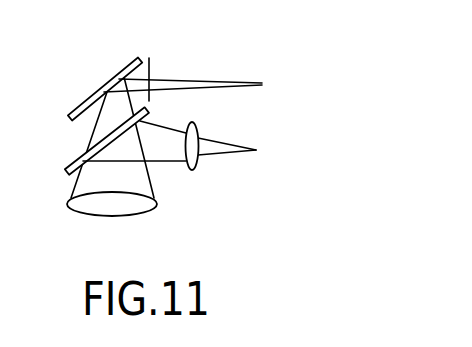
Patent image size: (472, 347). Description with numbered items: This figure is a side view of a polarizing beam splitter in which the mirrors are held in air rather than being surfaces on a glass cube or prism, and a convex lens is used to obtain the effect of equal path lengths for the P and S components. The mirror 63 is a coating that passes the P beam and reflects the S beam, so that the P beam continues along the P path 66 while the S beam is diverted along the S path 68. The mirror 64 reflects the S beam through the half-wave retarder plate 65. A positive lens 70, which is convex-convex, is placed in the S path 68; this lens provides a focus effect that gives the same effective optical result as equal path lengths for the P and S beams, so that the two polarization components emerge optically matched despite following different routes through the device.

The mirror 63 is at (80, 163).
The mirror 64 is at (85, 98).
The half-wave retarder plate 65 is at (150, 62).
The P path 66 is at (192, 78).
The S path 68 is at (167, 162).
The positive lens 70 is at (200, 123).